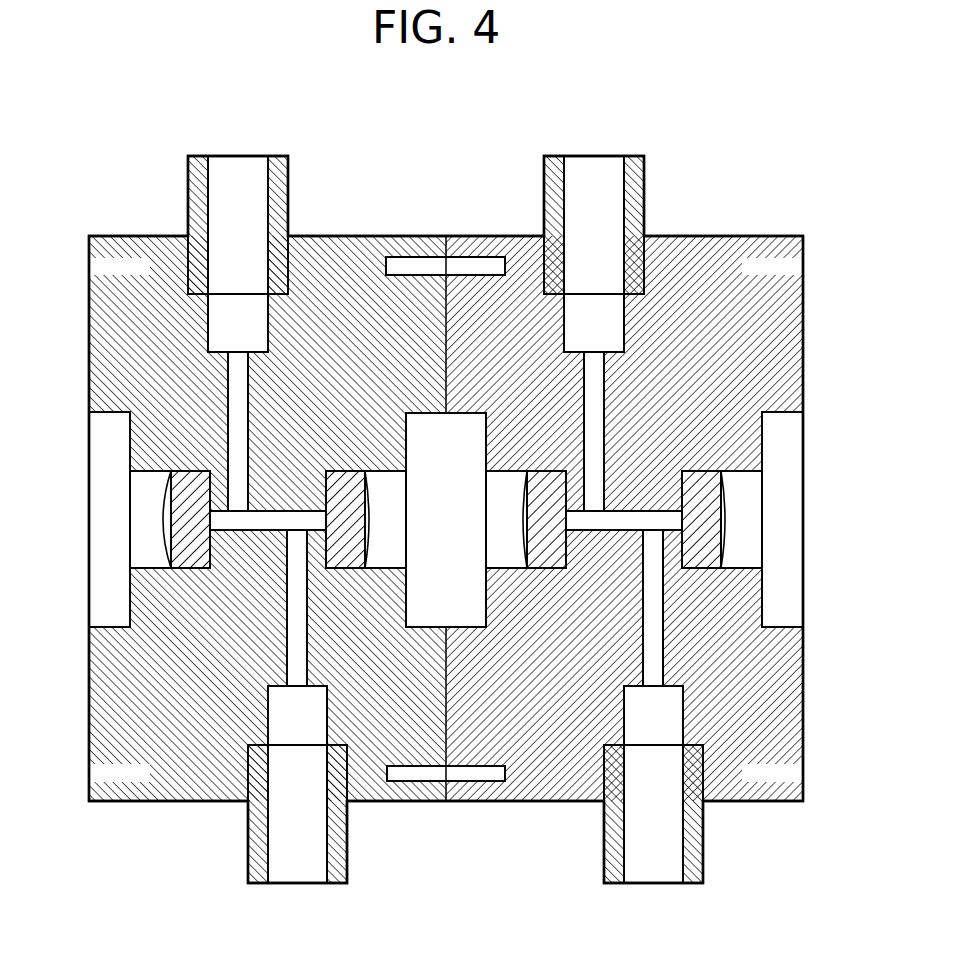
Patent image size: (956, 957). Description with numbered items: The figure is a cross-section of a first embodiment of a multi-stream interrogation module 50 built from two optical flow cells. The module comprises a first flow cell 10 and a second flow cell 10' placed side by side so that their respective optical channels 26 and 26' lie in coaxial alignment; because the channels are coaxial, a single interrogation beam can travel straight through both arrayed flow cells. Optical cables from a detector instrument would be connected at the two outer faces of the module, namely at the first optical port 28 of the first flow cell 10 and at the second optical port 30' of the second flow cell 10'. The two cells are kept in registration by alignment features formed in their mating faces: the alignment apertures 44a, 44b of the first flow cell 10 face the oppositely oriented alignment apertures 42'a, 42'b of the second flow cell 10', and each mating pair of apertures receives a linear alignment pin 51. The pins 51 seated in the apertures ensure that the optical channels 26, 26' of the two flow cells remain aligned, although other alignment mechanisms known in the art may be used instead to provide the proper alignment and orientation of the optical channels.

The multi-stream interrogation module 50 is at (372, 120).
The first flow cell 10 is at (267, 519).
The second flow cell 10' is at (624, 519).
The optical channel 26 is at (208, 519).
The optical channel 26' is at (686, 519).
The first optical port 28 is at (90, 497).
The second optical port 30' is at (802, 519).
The alignment aperture 44a is at (397, 257).
The alignment aperture 44b is at (408, 784).
The alignment aperture 42'a is at (484, 200).
The alignment aperture 42'b is at (479, 806).
The linear alignment pin 51 is at (465, 258).